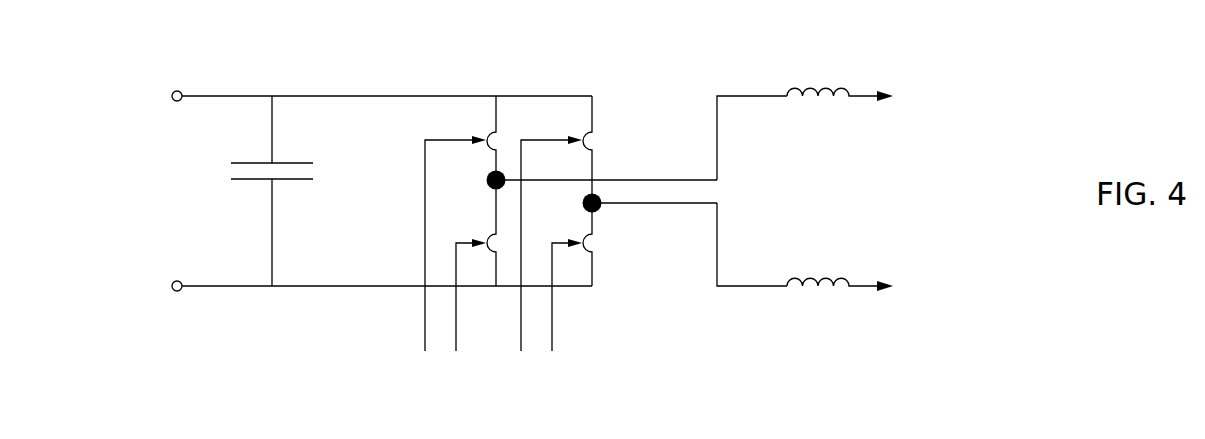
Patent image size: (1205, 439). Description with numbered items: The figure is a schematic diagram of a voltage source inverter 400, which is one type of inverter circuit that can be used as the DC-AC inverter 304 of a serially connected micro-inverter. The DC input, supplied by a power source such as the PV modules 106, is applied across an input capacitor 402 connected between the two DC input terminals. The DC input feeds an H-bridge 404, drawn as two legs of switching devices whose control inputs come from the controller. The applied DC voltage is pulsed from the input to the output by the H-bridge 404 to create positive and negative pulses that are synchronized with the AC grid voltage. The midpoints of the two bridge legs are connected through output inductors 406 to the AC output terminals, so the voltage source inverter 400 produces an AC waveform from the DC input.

The voltage source inverter 400 is at (1050, 43).
The PV modules 106 is at (127, 318).
The DC-AC inverter 304 is at (166, 378).
The input capacitor 402 is at (243, 162).
The H-bridge 404 is at (521, 64).
The output inductors 406 is at (797, 102).